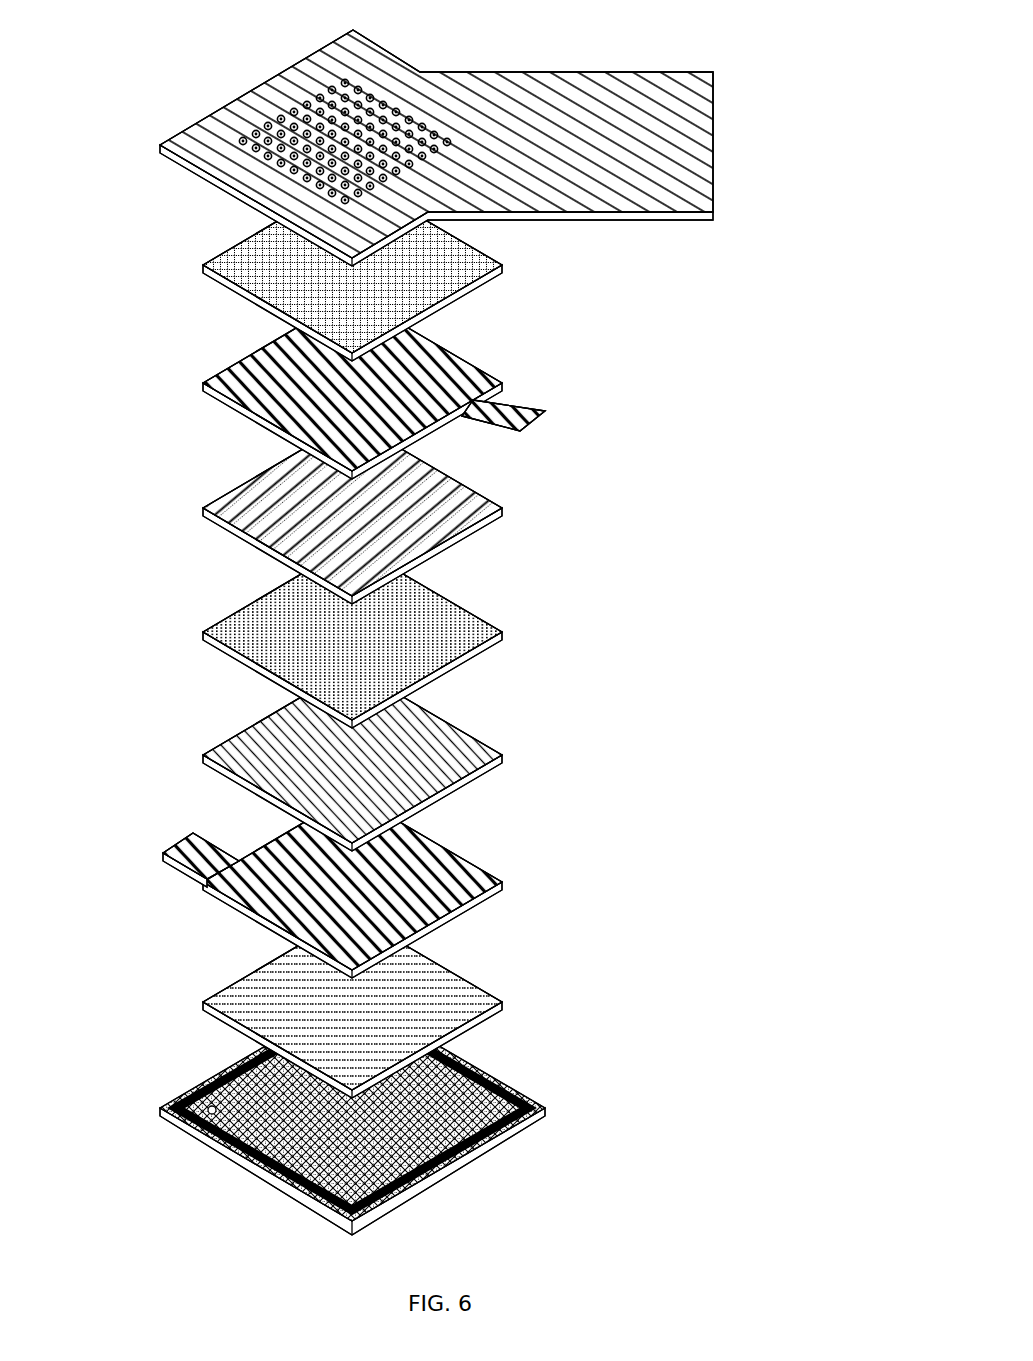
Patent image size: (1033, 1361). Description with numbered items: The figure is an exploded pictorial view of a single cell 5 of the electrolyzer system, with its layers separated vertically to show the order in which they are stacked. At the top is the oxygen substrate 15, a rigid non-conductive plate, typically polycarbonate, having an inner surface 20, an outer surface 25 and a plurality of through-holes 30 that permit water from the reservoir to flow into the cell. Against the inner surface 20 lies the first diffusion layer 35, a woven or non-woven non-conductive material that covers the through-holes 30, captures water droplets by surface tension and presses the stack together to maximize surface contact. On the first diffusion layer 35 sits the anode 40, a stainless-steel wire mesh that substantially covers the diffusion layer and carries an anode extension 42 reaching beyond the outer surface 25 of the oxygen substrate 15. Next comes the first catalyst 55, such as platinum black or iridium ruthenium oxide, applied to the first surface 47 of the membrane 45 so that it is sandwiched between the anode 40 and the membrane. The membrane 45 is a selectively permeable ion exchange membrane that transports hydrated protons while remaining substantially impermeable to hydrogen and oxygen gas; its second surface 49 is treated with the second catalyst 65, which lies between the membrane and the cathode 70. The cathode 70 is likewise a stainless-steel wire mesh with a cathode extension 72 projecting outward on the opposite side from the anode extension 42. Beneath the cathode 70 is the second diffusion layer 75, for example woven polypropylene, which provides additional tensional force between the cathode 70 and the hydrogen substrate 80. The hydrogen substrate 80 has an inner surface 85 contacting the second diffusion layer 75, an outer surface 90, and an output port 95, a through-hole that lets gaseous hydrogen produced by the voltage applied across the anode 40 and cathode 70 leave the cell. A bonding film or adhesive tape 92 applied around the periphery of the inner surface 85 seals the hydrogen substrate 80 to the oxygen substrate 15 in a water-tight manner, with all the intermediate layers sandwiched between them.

The cell 5 is at (420, 30).
The oxygen substrate 15 is at (435, 148).
The inner surface 20 is at (208, 188).
The outer surface 25 is at (653, 90).
The through-holes 30 is at (273, 122).
The first diffusion layer 35 is at (260, 265).
The anode 40 is at (423, 377).
The anode extension 42 is at (518, 403).
The membrane 45 is at (377, 637).
The first surface 47 is at (268, 610).
The second surface 49 is at (483, 650).
The first catalyst 55 is at (258, 500).
The second catalyst 65 is at (300, 767).
The cathode 70 is at (338, 886).
The cathode extension 72 is at (190, 835).
The second diffusion layer 75 is at (285, 1000).
The hydrogen substrate 80 is at (387, 1129).
The inner surface 85 is at (250, 1093).
The outer surface 90 is at (297, 1203).
The bonding film or adhesive tape 92 is at (530, 1092).
The output port 95 is at (205, 1112).